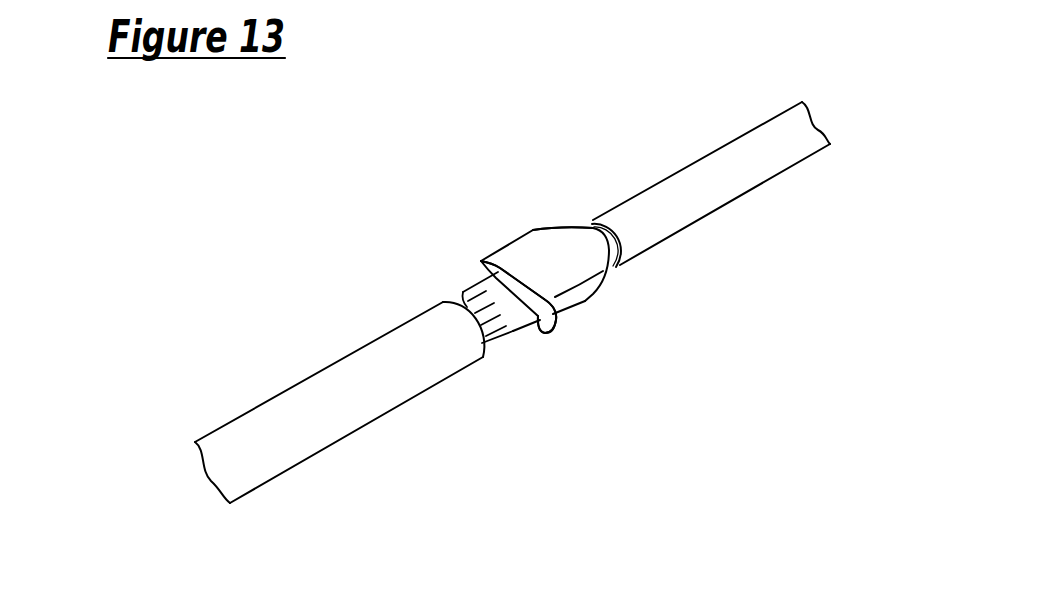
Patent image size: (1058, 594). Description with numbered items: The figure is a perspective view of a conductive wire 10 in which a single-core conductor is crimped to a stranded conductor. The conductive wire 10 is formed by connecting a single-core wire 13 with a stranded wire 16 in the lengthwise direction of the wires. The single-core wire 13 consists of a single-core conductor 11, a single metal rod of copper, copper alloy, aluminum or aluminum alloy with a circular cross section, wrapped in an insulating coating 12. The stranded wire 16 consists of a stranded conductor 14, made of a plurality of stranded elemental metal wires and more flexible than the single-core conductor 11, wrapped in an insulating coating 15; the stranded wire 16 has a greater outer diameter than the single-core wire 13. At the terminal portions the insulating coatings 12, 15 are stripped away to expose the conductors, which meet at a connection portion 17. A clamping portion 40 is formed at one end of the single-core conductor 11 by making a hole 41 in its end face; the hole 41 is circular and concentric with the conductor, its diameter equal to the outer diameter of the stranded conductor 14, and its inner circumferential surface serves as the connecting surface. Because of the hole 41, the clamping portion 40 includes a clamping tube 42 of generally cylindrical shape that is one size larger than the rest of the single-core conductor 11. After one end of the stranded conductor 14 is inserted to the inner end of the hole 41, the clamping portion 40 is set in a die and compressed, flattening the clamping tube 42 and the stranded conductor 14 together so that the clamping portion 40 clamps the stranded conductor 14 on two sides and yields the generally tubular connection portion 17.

The conductive wire 10 is at (384, 107).
The single-core conductor 11 is at (564, 240).
The insulating coating 12 is at (670, 190).
The single-core wire 13 is at (752, 143).
The stranded conductor 14 is at (512, 333).
The insulating coating 15 is at (367, 412).
The stranded wire 16 is at (293, 452).
The connection portion 17 is at (517, 262).
The clamping portion 40 is at (530, 248).
The hole 41 is at (488, 288).
The clamping tube 42 is at (580, 307).